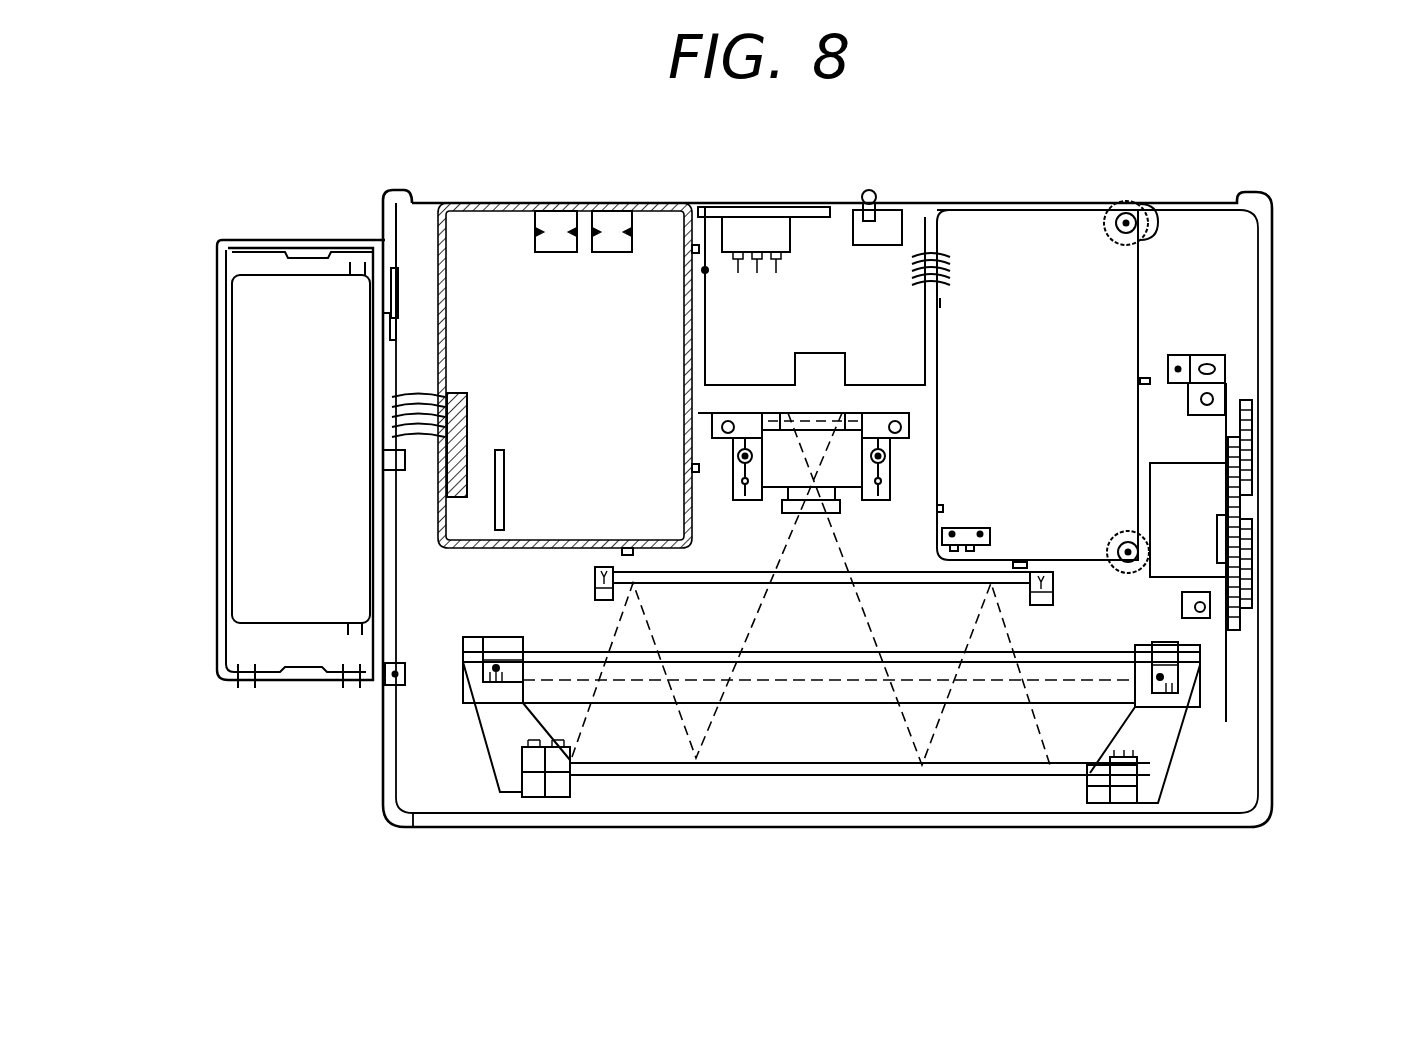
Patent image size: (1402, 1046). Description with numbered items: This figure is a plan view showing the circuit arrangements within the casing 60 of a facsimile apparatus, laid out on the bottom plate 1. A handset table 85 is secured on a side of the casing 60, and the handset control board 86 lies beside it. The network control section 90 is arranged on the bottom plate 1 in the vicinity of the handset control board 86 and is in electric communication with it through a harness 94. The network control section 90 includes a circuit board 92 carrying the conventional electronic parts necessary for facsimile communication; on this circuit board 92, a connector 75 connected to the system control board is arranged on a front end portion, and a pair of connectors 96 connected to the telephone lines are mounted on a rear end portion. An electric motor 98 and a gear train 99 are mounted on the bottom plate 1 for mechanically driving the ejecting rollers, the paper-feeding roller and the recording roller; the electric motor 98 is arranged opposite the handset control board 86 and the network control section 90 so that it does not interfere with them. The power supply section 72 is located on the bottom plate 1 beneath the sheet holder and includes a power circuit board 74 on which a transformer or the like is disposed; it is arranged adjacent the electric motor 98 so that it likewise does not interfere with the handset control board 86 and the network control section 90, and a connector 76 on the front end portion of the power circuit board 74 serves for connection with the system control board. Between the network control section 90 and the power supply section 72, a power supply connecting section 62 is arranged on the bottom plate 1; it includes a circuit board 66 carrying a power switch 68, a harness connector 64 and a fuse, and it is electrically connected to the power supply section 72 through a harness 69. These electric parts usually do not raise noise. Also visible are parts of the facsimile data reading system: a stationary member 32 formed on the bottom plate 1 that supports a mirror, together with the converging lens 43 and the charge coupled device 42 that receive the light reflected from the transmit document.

The bottom plate 1 is at (1236, 757).
The stationary member 32 is at (742, 775).
The charge coupled device (CCD) 42 is at (862, 415).
The converging lens 43 is at (838, 512).
The casing 60 is at (1278, 690).
The power supply connecting section 62 is at (819, 203).
The harness connector 64 is at (757, 222).
The circuit board 66 is at (912, 248).
The power switch 68 is at (880, 225).
The harness 69 is at (950, 255).
The power supply section 72 is at (1150, 264).
The power circuit board 74 is at (1125, 318).
The connector 75 is at (493, 522).
The connector 76 is at (988, 540).
The handset table 85 is at (214, 580).
The handset control board 86 is at (278, 606).
The network control section 90 is at (425, 252).
The circuit board 92 is at (480, 210).
The harness 94 is at (418, 392).
The connectors 96 is at (554, 225).
The electric motor 98 is at (1190, 490).
The gear train 99 is at (1252, 565).